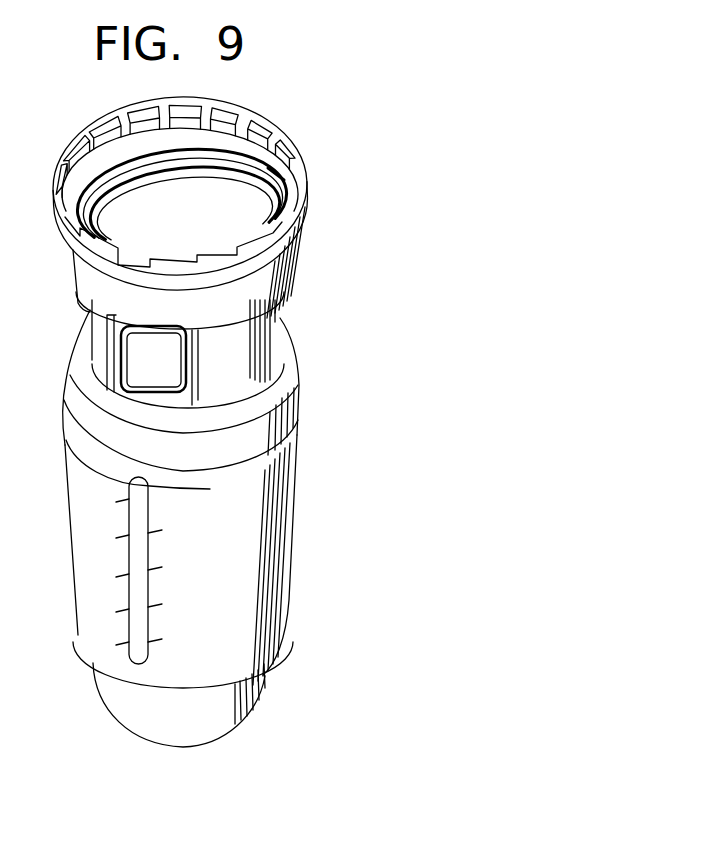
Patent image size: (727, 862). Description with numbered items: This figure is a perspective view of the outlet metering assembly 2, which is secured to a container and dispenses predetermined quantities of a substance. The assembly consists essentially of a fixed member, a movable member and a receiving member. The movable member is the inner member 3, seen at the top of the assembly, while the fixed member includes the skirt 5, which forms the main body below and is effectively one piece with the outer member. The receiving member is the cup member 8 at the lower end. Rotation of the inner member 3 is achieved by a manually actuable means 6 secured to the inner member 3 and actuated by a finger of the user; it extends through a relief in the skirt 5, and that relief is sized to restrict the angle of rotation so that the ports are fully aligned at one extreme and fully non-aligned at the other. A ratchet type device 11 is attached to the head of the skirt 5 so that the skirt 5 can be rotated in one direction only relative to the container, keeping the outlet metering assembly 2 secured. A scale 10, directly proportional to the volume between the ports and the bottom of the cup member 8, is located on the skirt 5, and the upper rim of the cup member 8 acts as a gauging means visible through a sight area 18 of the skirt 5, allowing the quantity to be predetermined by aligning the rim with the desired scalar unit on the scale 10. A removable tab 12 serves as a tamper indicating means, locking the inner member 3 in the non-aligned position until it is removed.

The outlet metering assembly 2 is at (326, 502).
The inner member 3 is at (208, 187).
The skirt 5 is at (275, 606).
The manually actuable means 6 is at (112, 342).
The cup member 8 is at (130, 710).
The scale 10 is at (165, 618).
The ratchet type device 11 is at (300, 180).
The removable tab 12 is at (157, 387).
The sight area 18 is at (133, 597).